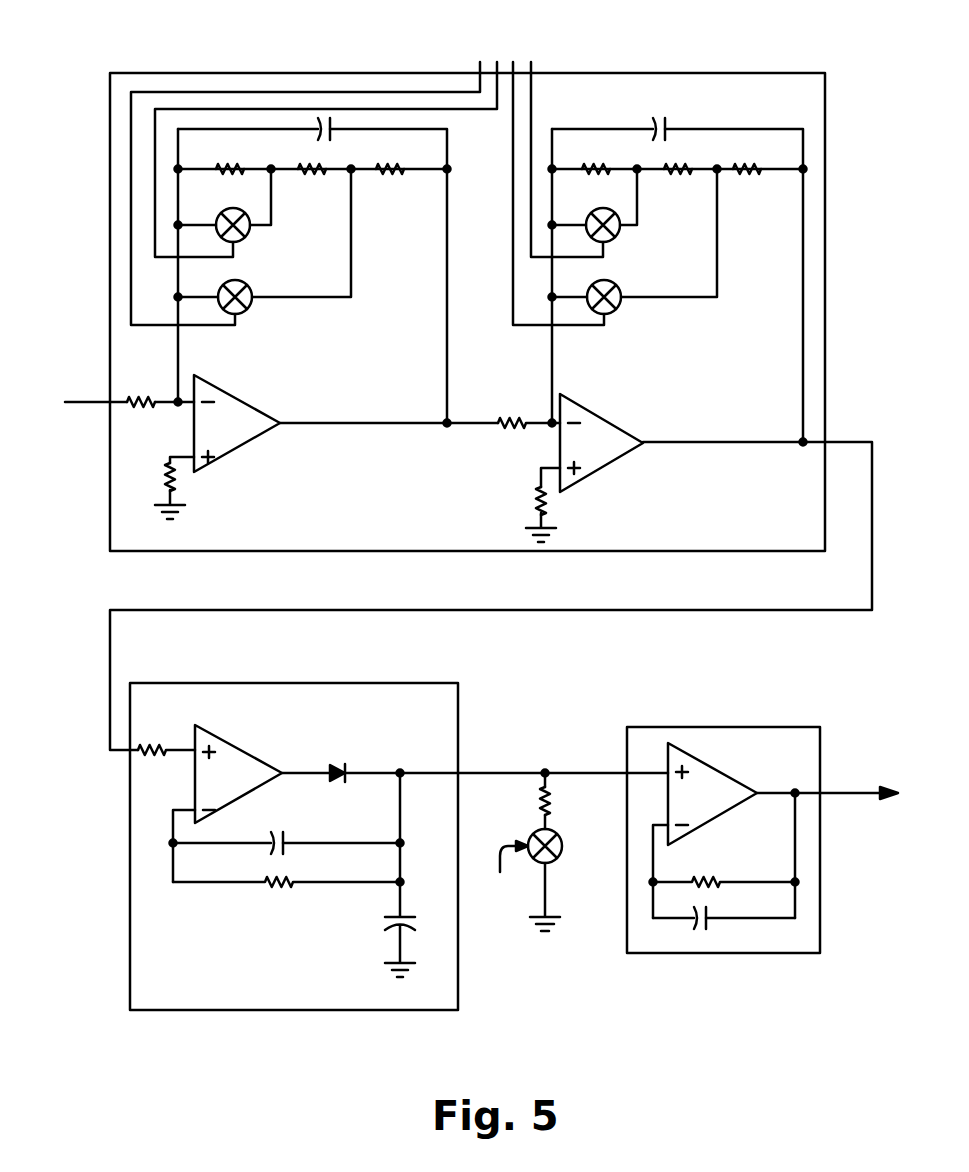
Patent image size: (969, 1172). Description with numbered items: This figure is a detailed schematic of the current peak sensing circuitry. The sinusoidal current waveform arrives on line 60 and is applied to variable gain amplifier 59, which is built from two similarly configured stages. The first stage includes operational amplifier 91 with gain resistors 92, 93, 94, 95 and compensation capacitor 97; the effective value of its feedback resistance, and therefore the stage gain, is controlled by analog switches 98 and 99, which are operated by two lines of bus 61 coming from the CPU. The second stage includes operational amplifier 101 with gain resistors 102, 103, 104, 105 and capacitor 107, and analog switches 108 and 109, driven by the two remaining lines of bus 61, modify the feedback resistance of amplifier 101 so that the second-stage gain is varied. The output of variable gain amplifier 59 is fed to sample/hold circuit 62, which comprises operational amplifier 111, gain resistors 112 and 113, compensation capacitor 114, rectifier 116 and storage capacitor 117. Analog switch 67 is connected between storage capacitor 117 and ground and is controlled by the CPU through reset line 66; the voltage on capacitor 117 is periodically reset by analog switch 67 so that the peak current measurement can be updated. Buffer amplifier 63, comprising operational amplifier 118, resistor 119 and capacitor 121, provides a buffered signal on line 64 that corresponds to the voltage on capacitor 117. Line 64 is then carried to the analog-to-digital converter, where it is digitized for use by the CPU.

The variable gain amplifier 59 is at (378, 494).
The line 60 is at (89, 405).
The bus 61 is at (548, 57).
The sample/hold circuit 62 is at (224, 961).
The buffer amplifier 63 is at (772, 769).
The line 64 is at (855, 795).
The reset line 66 is at (507, 869).
The analog switch 67 is at (562, 846).
The operational amplifier 91 is at (228, 425).
The gain resistor 92 is at (143, 410).
The gain resistor 93 is at (246, 143).
The gain resistor 94 is at (314, 176).
The gain resistor 95 is at (386, 176).
The compensation capacitor 97 is at (333, 139).
The analog switch 98 is at (244, 230).
The analog switch 99 is at (247, 306).
The operational amplifier 101 is at (600, 437).
The gain resistor 102 is at (512, 430).
The gain resistor 103 is at (612, 143).
The gain resistor 104 is at (690, 176).
The gain resistor 105 is at (776, 193).
The capacitor 107 is at (669, 126).
The analog switch 108 is at (616, 232).
The analog switch 109 is at (618, 307).
The operational amplifier 111 is at (250, 775).
The gain resistor 112 is at (166, 716).
The gain resistor 113 is at (280, 888).
The compensation capacitor 114 is at (279, 831).
The rectifier 116 is at (336, 762).
The storage capacitor 117 is at (389, 917).
The operational amplifier 118 is at (718, 792).
The resistor 119 is at (717, 878).
The capacitor 121 is at (710, 926).